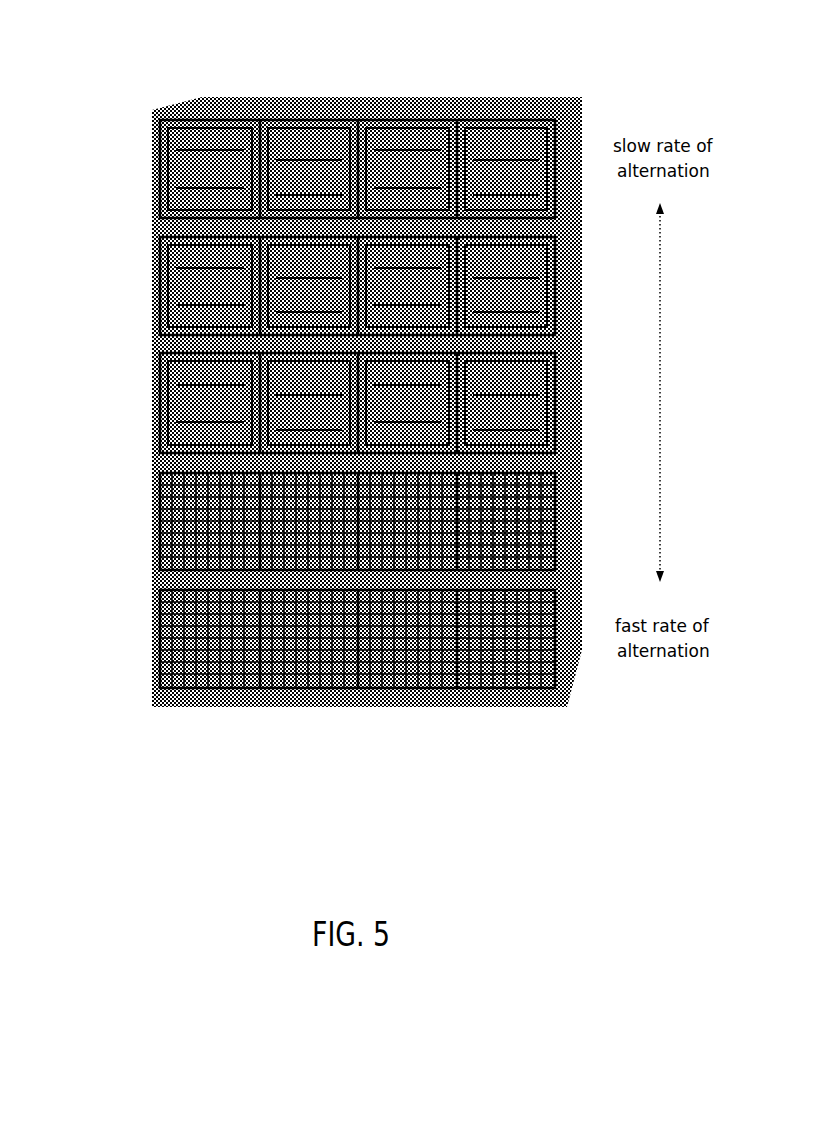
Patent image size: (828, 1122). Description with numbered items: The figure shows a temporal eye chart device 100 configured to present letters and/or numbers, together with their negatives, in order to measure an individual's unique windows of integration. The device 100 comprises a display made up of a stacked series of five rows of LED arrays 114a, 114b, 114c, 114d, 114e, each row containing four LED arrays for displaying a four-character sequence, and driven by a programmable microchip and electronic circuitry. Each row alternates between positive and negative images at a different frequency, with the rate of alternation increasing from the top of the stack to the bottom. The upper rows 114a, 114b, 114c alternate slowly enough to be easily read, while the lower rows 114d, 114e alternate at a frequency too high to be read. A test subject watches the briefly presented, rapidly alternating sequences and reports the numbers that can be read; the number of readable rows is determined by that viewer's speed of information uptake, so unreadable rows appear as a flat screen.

The device 100 is at (424, 60).
The LED array row 114a is at (166, 176).
The LED array row 114b is at (166, 288).
The LED array row 114c is at (166, 382).
The LED array row 114d is at (166, 510).
The LED array row 114e is at (166, 620).